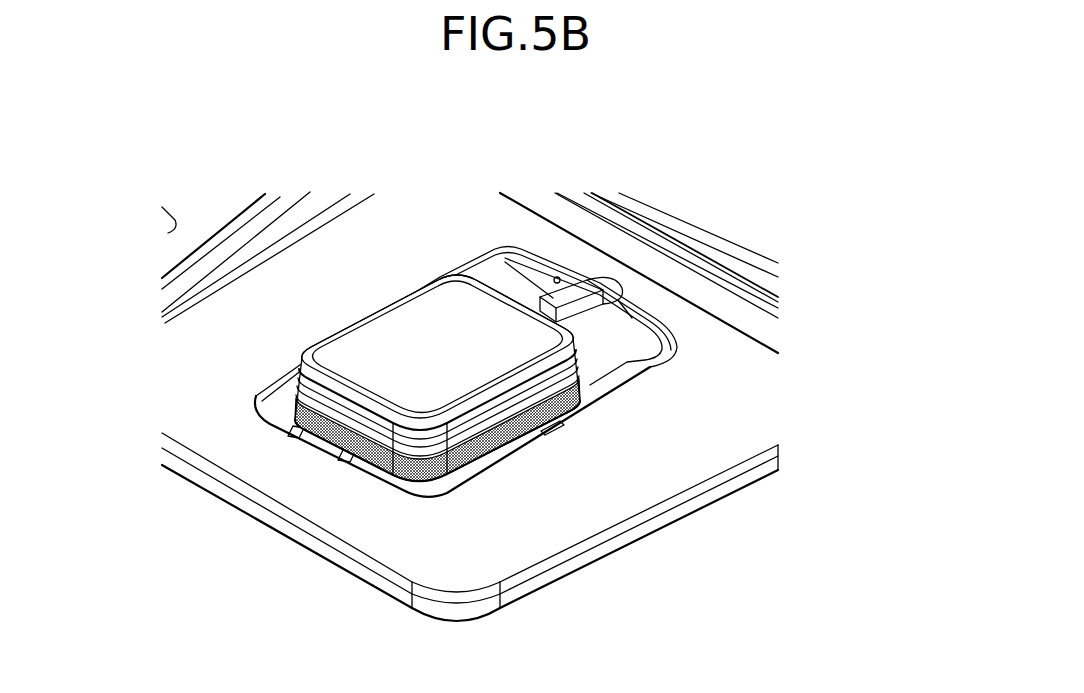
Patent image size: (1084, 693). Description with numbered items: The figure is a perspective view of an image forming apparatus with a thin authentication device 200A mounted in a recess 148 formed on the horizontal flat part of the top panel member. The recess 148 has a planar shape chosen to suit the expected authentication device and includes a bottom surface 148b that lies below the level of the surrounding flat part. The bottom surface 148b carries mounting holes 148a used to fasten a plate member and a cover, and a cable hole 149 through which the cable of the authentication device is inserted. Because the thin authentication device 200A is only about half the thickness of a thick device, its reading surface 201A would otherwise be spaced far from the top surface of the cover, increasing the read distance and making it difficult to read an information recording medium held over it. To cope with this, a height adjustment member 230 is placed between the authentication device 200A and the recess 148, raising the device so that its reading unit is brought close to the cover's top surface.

The recess 148 is at (605, 381).
The mounting holes 148a is at (342, 458).
The bottom surface 148b is at (580, 401).
The cable hole 149 is at (632, 342).
The thin authentication device 200A is at (418, 353).
The reading surface 201A is at (477, 327).
The height adjustment member 230 is at (390, 466).